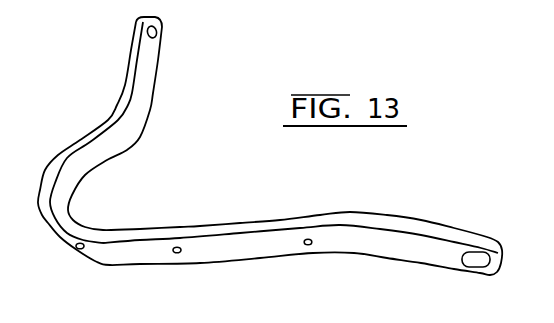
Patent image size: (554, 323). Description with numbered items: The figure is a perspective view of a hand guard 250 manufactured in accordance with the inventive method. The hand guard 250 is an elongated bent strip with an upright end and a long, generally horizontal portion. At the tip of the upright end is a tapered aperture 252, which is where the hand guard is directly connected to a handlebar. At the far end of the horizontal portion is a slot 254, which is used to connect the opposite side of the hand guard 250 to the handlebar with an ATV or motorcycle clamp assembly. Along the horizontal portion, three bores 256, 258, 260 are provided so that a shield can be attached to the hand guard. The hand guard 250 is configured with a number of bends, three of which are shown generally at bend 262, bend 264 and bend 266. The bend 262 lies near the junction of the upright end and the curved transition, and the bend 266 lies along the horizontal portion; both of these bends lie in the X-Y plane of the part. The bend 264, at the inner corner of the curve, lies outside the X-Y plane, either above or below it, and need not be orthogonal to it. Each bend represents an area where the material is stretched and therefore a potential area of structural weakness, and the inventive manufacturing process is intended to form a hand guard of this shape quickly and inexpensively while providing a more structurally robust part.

The hand guard 250 is at (392, 214).
The tapered aperture 252 is at (164, 28).
The slot 254 is at (476, 268).
The bore 256 is at (79, 250).
The bore 258 is at (179, 254).
The bore 260 is at (308, 246).
The bend 262 is at (112, 101).
The bend 264 is at (85, 203).
The bend 266 is at (387, 273).